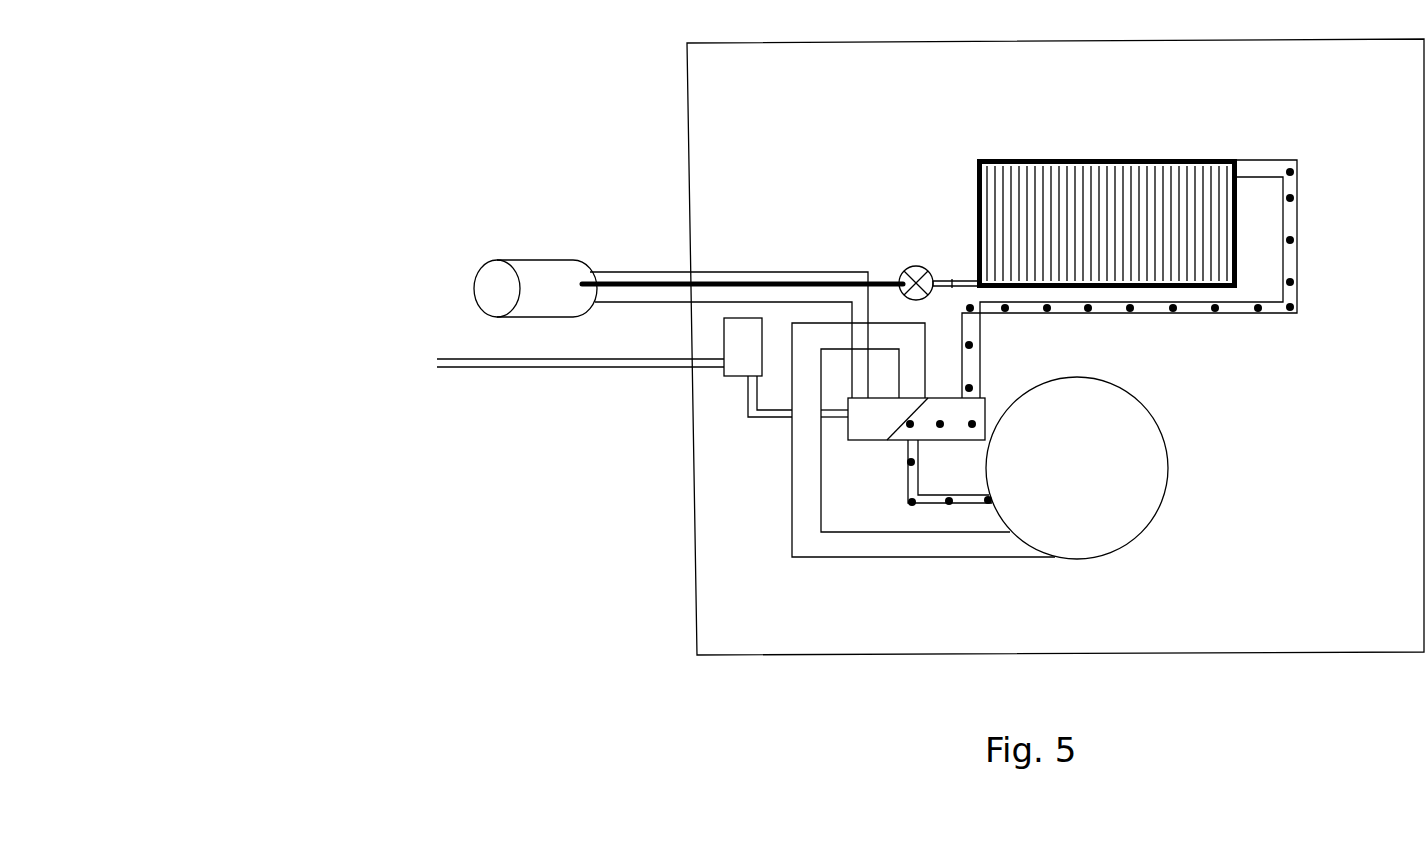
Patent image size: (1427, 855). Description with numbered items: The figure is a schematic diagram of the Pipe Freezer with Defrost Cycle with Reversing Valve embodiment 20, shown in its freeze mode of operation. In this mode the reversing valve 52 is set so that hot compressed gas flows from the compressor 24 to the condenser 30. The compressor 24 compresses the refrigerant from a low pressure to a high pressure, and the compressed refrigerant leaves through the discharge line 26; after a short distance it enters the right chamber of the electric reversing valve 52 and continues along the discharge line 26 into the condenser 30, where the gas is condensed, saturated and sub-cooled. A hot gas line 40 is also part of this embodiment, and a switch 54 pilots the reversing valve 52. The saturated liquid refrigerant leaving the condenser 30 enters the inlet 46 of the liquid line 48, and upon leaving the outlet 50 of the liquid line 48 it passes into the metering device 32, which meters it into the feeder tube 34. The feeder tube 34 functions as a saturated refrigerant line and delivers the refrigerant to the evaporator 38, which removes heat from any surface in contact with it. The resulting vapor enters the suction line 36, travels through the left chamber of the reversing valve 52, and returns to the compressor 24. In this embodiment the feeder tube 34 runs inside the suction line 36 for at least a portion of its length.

The Pipe Freezer with Defrost Cycle with Reversing Valve embodiment 20 is at (248, 306).
The compressor 24 is at (1168, 442).
The discharge line 26 is at (1130, 313).
The condenser 30 is at (1179, 158).
The metering device 32 is at (909, 272).
The feeder tube 34 is at (885, 278).
The suction line 36 is at (642, 272).
The evaporator 38 is at (513, 260).
The hot gas line 40 is at (853, 368).
The inlet of liquid line 46 is at (973, 279).
The liquid line 48 is at (952, 279).
The outlet of liquid line 50 is at (932, 277).
The reversing valve 52 is at (862, 442).
The switch piloting the reversing valve 54 is at (737, 378).